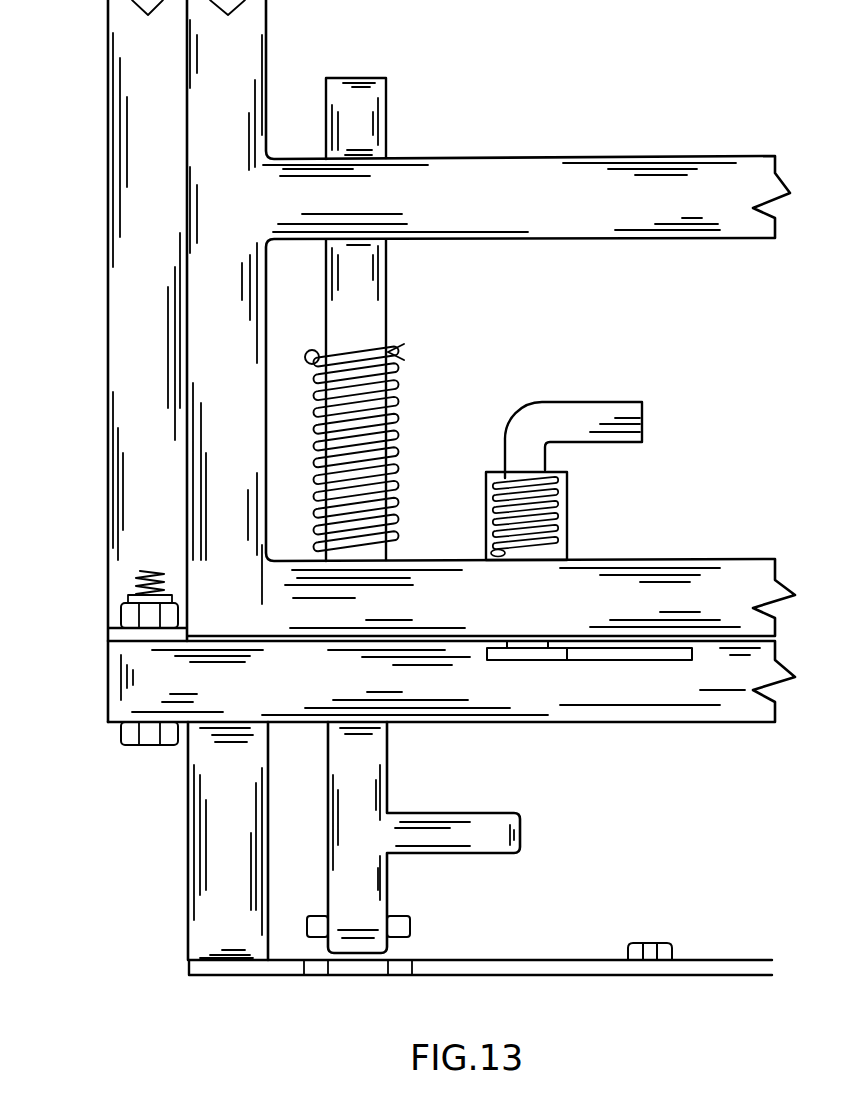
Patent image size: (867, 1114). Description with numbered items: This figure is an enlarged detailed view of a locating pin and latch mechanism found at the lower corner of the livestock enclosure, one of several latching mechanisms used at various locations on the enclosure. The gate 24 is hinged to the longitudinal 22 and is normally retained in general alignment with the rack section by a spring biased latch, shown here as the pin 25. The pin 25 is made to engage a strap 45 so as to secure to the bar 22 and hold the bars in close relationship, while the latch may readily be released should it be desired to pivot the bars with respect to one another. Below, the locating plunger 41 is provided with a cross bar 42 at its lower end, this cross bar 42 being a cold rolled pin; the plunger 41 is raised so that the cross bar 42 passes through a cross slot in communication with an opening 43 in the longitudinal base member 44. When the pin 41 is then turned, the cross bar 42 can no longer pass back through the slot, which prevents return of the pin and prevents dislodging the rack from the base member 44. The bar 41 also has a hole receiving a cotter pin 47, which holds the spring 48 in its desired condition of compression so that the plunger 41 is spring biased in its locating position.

The longitudinal 22 is at (520, 705).
The gate 24 is at (132, 398).
The spring biased latch 25 is at (593, 412).
The plunger 41 is at (370, 793).
The cross bar 42 is at (405, 930).
The opening 43 is at (327, 973).
The longitudinal base member 44 is at (536, 962).
The strap 45 is at (628, 655).
The cotter pin 47 is at (318, 353).
The spring 48 is at (392, 438).